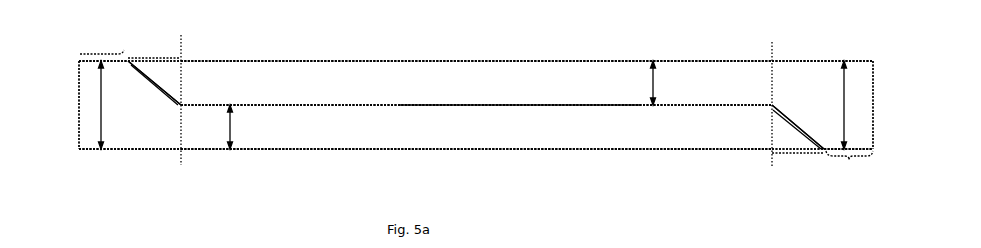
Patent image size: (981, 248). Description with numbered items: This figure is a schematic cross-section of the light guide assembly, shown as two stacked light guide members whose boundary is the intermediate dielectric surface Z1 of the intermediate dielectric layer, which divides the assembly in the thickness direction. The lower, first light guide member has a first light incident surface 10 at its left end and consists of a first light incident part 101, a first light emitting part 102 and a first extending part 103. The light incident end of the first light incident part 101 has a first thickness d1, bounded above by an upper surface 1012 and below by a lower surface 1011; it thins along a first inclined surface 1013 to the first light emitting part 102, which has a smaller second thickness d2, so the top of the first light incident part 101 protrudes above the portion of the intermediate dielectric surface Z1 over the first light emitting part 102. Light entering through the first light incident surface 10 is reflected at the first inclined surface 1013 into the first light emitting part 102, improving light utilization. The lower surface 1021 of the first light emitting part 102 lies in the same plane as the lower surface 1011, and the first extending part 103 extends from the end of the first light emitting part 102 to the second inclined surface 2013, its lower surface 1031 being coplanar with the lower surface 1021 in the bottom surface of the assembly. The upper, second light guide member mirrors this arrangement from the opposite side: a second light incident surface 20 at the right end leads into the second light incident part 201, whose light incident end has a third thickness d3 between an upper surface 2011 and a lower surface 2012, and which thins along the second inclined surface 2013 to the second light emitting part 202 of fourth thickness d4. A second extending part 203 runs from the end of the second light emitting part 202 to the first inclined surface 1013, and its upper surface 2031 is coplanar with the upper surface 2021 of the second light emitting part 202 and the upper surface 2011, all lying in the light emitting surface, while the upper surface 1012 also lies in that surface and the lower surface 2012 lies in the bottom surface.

The first light incident surface 10 is at (79, 103).
The second light incident surface 20 is at (873, 97).
The first light incident part 101 is at (130, 105).
The lower surface of the first light incident part 1011 is at (150, 150).
The upper surface of the light incident end of the first light incident part 1012 is at (103, 50).
The first inclined surface 1013 is at (158, 88).
The first light emitting part 102 is at (476, 127).
The lower surface of the first light emitting part 1021 is at (432, 150).
The first extending part 103 is at (781, 135).
The lower surface of the first extending part 1031 is at (790, 152).
The second light incident part 201 is at (822, 105).
The upper surface of the second light incident part 2011 is at (790, 61).
The lower surface of the light incident end of the second light incident part 2012 is at (848, 167).
The second inclined surface 2013 is at (786, 120).
The second light emitting part 202 is at (476, 83).
The upper surface of the second light emitting part 2021 is at (372, 61).
The second extending part 203 is at (170, 73).
The upper surface of the second extending part 2031 is at (143, 58).
The first thickness d1 is at (93, 105).
The second thickness d2 is at (220, 127).
The third thickness d3 is at (853, 105).
The fourth thickness d4 is at (665, 83).
The intermediate dielectric surface Z1 is at (515, 105).